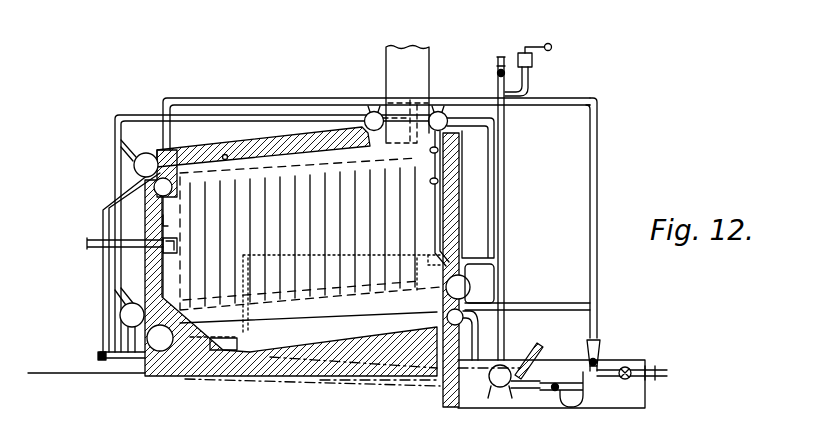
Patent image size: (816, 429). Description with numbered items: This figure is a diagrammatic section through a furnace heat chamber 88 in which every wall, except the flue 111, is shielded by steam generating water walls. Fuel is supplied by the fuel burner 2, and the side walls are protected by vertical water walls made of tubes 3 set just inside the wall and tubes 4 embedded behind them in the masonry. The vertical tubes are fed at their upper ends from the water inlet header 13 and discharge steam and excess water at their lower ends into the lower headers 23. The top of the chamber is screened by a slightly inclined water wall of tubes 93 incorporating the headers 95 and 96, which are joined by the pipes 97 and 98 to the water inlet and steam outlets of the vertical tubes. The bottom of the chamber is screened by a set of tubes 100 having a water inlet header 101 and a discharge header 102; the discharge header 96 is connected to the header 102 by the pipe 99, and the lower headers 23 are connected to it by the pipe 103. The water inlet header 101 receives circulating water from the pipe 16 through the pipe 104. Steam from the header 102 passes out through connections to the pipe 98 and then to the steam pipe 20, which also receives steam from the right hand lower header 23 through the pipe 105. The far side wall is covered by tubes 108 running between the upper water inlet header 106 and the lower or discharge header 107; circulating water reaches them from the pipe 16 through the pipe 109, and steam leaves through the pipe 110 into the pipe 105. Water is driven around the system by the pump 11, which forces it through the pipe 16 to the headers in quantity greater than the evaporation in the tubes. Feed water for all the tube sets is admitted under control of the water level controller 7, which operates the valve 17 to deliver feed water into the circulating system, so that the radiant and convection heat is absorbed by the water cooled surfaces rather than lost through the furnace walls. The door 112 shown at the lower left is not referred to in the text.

The fuel burner 2 is at (172, 254).
The tubes 3 is at (441, 151).
The tubes 4 is at (441, 182).
The water level controller 7 is at (503, 358).
The pump 11 is at (597, 385).
The water inlet header 13 is at (150, 195).
The pipe 16 is at (590, 235).
The valve 17 is at (650, 378).
The steam pipe 20 is at (505, 205).
The lower header 23 is at (135, 302).
The heat chamber 88 is at (252, 148).
The tubes 93 is at (225, 155).
The header 95 is at (371, 111).
The discharge header 96 is at (136, 164).
The pipe 97 is at (287, 97).
The pipe 98 is at (139, 115).
The pipe 99 is at (103, 211).
The tubes 100 is at (343, 317).
The water inlet header 101 is at (447, 317).
The discharge header 102 is at (165, 353).
The pipe 103 is at (127, 340).
The pipe 104 is at (538, 303).
The pipe 105 is at (477, 256).
The upper water inlet header 106 is at (312, 163).
The lower or discharge header 107 is at (291, 312).
The tubes 108 is at (377, 275).
The pipe 109 is at (405, 128).
The pipe 110 is at (432, 254).
The flue 111 is at (430, 57).
The door 112 is at (205, 334).